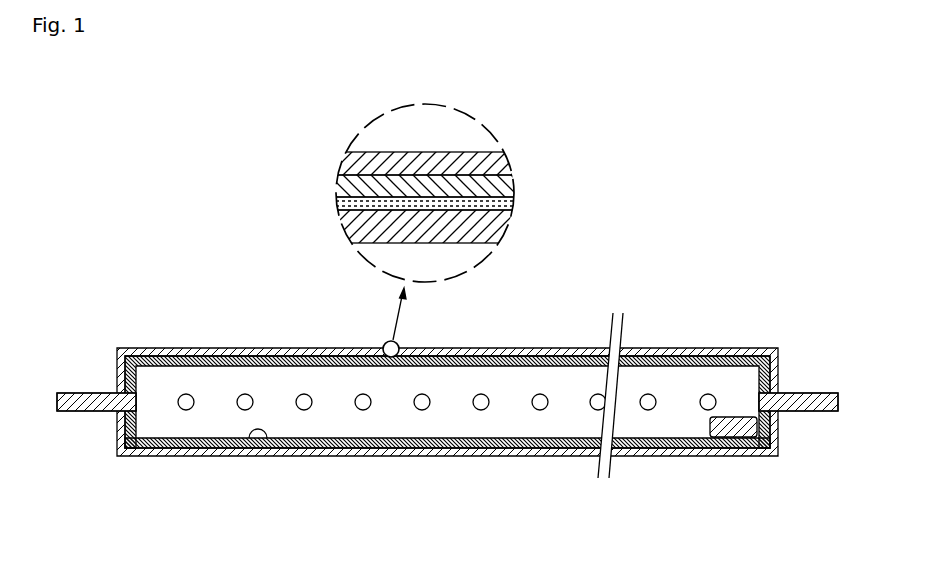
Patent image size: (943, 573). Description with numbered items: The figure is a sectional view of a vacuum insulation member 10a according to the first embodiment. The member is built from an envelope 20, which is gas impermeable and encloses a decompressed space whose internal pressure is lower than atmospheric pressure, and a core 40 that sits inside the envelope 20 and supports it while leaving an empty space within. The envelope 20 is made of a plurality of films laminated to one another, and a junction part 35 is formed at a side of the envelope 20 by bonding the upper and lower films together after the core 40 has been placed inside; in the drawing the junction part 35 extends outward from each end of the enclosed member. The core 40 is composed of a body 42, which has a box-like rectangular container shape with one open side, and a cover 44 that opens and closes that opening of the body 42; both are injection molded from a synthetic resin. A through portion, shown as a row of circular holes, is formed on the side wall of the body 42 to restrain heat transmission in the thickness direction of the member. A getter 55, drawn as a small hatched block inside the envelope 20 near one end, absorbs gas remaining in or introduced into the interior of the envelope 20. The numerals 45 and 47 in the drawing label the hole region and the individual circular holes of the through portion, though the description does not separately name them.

The vacuum insulation member 10a is at (447, 378).
The envelope 20 is at (213, 338).
The junction part 35 is at (85, 390).
The core 40 is at (447, 463).
The body 42 is at (259, 441).
The cover 44 is at (328, 368).
The vent portion 45 is at (447, 482).
The holes 47 is at (423, 411).
The getter 55 is at (743, 440).